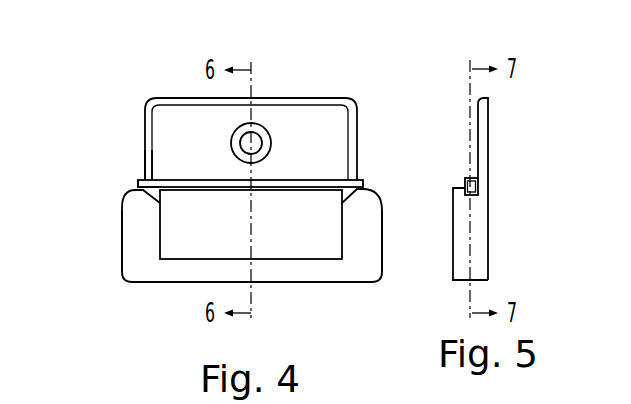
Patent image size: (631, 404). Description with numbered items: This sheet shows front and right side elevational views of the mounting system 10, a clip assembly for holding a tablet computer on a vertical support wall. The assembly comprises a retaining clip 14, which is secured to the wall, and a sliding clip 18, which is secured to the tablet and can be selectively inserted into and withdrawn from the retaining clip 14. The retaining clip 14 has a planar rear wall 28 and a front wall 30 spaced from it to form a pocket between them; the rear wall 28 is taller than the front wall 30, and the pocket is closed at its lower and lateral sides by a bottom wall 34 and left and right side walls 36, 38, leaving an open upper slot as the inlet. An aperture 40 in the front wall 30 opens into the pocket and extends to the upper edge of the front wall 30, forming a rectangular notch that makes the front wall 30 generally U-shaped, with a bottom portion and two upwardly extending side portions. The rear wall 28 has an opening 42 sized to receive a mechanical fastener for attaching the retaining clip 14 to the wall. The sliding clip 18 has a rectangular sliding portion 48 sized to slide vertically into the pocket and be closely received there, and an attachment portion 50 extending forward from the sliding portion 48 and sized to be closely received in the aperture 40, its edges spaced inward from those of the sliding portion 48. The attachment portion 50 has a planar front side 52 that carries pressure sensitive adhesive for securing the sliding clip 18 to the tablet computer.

In FIG. 4, the mounting system 10 is at (72, 102).
In FIG. 5, the mounting system 10 is at (560, 170).
In FIG. 4, the retaining clip 14 is at (308, 96).
In FIG. 5, the retaining clip 14 is at (490, 136).
In FIG. 4, the sliding clip 18 is at (313, 176).
In FIG. 5, the sliding clip 18 is at (461, 176).
In FIG. 4, the rear wall 28 is at (278, 97).
In FIG. 4, the front wall 30 is at (182, 276).
In FIG. 4, the bottom wall 34 is at (283, 283).
In FIG. 4, the left side wall 36 is at (382, 247).
In FIG. 5, the left side wall 36 is at (482, 252).
In FIG. 4, the right side wall 38 is at (122, 237).
In FIG. 4, the aperture 40 is at (303, 248).
In FIG. 4, the opening 42 is at (233, 143).
In FIG. 4, the sliding portion 48 is at (182, 182).
In FIG. 4, the attachment portion 50 is at (139, 182).
In FIG. 4, the front side 52 is at (178, 242).